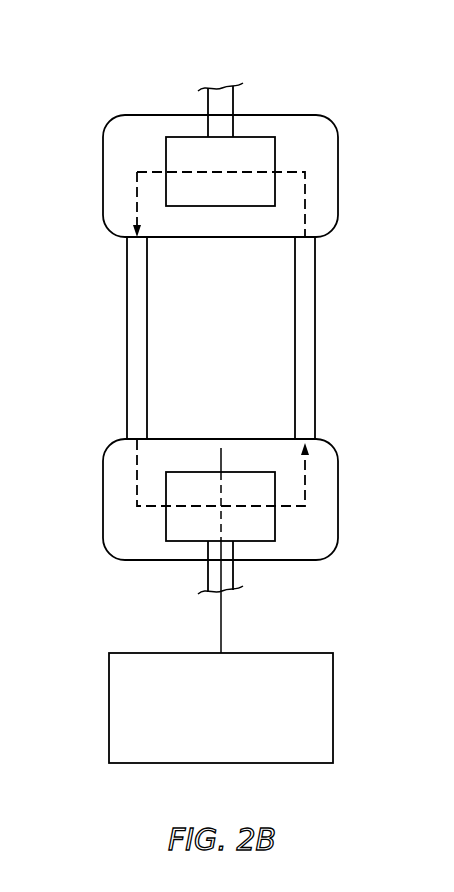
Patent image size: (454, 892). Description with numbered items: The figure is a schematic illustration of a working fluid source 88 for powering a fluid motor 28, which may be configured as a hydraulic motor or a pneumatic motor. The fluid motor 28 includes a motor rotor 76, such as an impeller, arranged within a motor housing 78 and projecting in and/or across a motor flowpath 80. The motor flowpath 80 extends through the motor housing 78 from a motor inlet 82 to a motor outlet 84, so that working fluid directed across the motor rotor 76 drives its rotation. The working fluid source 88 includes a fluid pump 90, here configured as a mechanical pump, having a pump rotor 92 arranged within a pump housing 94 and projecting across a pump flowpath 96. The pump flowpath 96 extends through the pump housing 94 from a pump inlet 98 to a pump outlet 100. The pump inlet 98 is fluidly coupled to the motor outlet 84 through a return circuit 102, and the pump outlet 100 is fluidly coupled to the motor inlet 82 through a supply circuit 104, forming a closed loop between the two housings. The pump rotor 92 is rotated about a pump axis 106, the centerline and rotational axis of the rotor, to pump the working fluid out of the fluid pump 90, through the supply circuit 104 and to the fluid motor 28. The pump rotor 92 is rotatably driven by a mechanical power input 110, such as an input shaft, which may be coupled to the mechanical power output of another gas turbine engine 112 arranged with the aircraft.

The fluid motor 28 is at (209, 132).
The motor rotor 76 is at (275, 152).
The motor housing 78 is at (103, 136).
The motor flowpath 80 is at (305, 195).
The motor inlet 82 is at (315, 238).
The motor outlet 84 is at (125, 240).
The working fluid source 88 is at (237, 522).
The fluid pump 90 is at (222, 494).
The pump rotor 92 is at (275, 527).
The pump housing 94 is at (103, 528).
The pump flowpath 96 is at (137, 483).
The pump inlet 98 is at (127, 438).
The pump outlet 100 is at (317, 435).
The return circuit 102 is at (127, 338).
The supply circuit 104 is at (315, 338).
The pump axis 106 is at (222, 465).
The mechanical power input 110 is at (233, 575).
The other gas turbine engine 112 is at (202, 723).